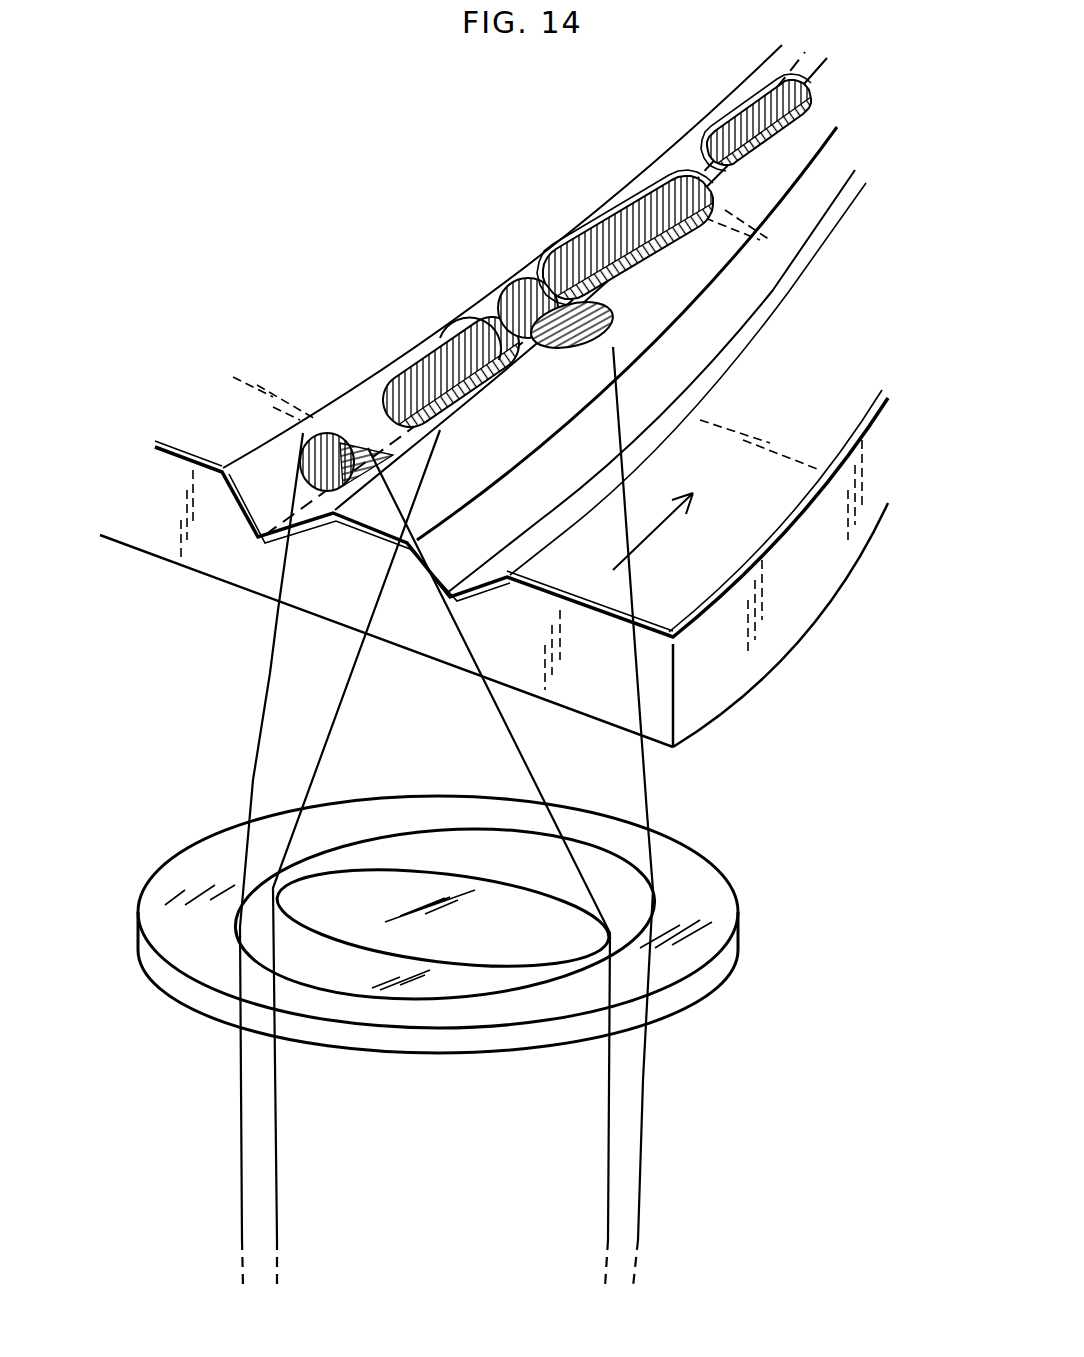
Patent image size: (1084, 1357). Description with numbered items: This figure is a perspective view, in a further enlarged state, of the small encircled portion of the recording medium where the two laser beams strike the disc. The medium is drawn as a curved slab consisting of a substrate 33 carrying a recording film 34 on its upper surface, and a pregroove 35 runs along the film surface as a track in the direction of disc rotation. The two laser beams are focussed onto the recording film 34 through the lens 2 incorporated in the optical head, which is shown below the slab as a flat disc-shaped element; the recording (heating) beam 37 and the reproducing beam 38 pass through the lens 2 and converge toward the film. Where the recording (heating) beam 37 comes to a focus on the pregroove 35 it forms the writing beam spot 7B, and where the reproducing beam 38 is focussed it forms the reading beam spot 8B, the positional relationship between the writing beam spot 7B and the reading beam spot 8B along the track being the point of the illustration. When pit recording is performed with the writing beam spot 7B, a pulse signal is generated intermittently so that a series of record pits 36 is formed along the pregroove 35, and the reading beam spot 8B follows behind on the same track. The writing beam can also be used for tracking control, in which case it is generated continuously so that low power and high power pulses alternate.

The lens 2 is at (740, 932).
The writing beam spot 7B is at (318, 436).
The reading beam spot 8B is at (614, 309).
The substrate 33 is at (760, 645).
The recording film 34 is at (780, 550).
The pregroove 35 is at (445, 586).
The record pit 36 is at (716, 129).
The recording (heating) beam 37 is at (263, 703).
The reproducing beam 38 is at (652, 781).